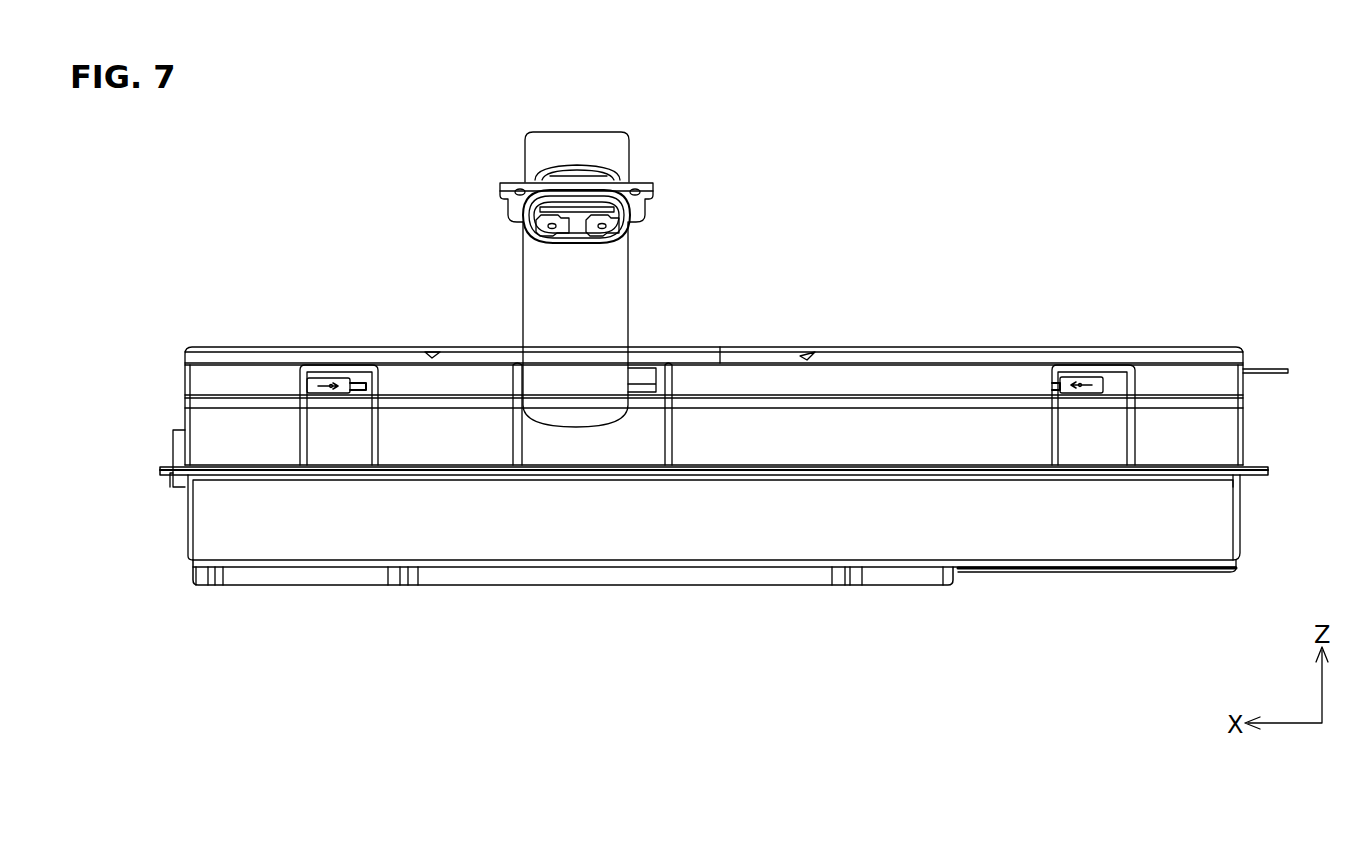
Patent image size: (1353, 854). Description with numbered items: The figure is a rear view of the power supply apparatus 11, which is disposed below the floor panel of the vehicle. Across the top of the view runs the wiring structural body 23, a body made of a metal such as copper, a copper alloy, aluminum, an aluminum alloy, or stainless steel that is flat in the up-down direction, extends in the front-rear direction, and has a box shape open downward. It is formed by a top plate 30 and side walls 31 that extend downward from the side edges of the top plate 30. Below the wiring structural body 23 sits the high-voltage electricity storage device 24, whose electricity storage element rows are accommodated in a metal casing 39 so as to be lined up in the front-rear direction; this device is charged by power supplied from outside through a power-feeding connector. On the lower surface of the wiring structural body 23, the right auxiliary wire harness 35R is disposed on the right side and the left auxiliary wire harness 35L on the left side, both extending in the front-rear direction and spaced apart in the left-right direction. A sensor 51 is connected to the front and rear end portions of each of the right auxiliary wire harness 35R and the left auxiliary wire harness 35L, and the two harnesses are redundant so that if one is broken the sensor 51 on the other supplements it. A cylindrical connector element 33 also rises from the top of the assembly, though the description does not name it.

The power supply apparatus 11 is at (1254, 307).
The wiring structural body 23 is at (125, 247).
The top plate 30 is at (241, 346).
The side walls 31 is at (215, 425).
The high-voltage electricity storage device 24 is at (595, 540).
The metal casing 39 is at (303, 586).
The connector 33 is at (615, 290).
The left auxiliary wire harness 35L is at (360, 380).
The right auxiliary wire harness 35R is at (1058, 380).
The sensor 51 is at (312, 380).